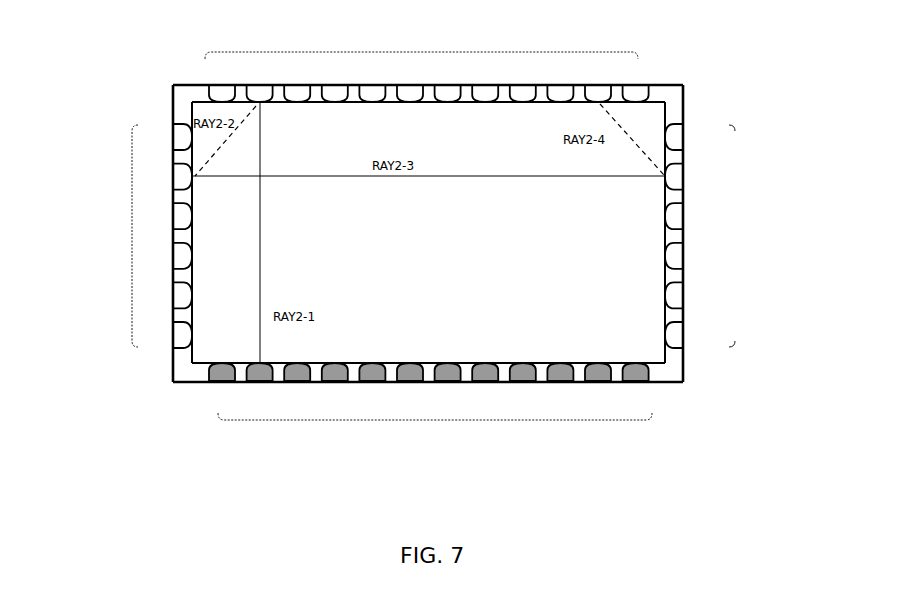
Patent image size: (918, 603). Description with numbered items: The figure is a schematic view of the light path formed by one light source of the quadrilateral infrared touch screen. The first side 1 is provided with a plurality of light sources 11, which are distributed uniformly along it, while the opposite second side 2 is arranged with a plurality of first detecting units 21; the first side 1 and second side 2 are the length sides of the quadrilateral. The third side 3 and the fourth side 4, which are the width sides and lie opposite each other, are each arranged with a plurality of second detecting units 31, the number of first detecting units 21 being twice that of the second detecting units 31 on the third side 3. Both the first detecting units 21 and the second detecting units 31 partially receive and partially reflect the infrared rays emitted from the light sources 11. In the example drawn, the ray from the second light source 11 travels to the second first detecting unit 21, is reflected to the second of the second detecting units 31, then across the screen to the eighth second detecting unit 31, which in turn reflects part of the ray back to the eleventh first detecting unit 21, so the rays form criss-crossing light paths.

The first side 1 is at (195, 382).
The second side 2 is at (669, 84).
The third side 3 is at (172, 101).
The fourth side 4 is at (685, 372).
The light source 11 is at (440, 420).
The first detecting unit 21 is at (413, 52).
The second detecting unit 31 is at (131, 238).